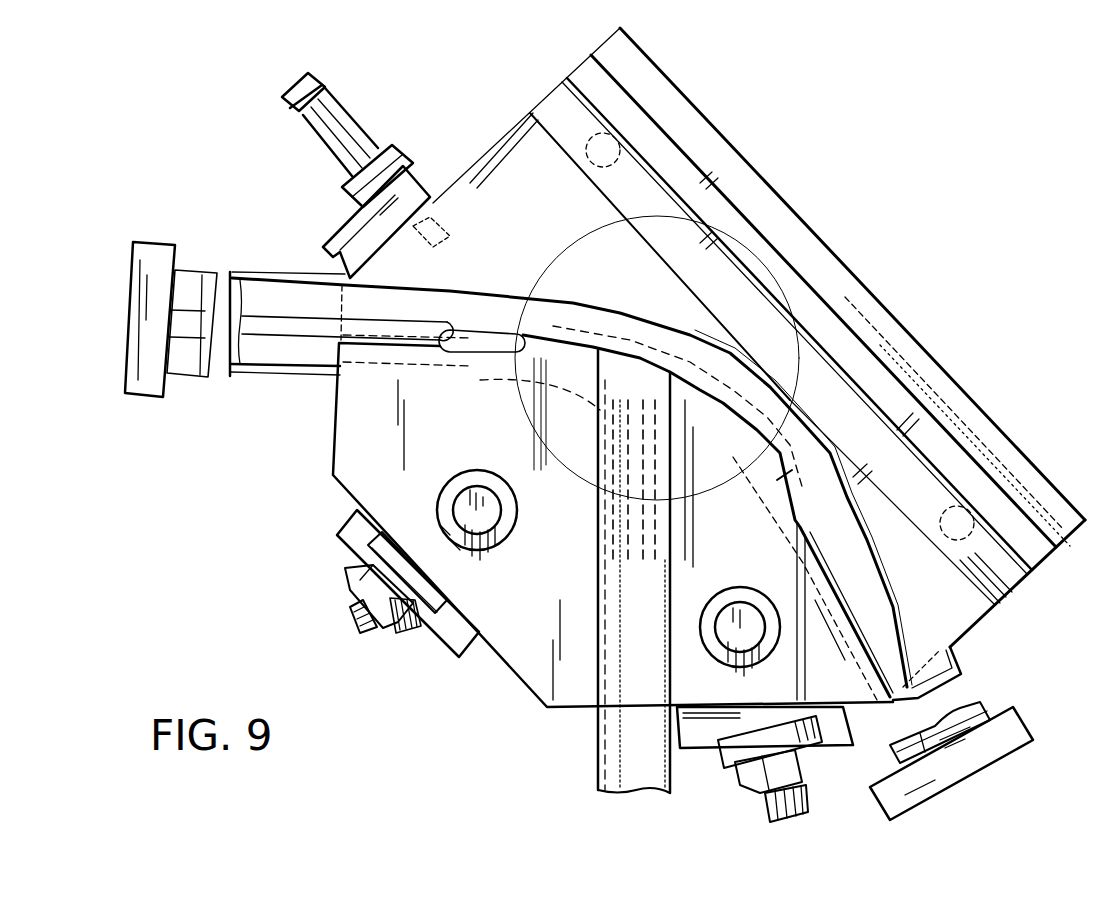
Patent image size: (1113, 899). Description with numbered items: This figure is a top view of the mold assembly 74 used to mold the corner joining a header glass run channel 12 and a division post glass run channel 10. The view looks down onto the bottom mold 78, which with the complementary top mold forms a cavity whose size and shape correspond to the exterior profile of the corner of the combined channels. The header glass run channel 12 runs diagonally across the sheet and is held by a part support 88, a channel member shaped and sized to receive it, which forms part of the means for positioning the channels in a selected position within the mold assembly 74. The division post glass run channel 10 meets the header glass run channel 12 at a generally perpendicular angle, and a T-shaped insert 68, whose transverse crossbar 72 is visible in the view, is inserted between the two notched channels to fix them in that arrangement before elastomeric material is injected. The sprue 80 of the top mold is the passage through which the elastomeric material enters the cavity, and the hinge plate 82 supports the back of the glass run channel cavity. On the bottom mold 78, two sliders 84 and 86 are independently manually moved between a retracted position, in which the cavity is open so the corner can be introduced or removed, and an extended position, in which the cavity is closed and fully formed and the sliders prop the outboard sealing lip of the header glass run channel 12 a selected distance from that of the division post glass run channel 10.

The division post glass run channel 10 is at (343, 273).
The header glass run channel 12 is at (923, 637).
The T-shaped insert 68 is at (595, 745).
The transverse crossbar 72 is at (486, 312).
The mold assembly 74 is at (928, 276).
The bottom mold 78 is at (528, 683).
The sprue 80 is at (630, 377).
The hinge plate 82 is at (693, 158).
The slider 84 is at (507, 600).
The slider 86 is at (707, 680).
The part support 88 is at (210, 378).